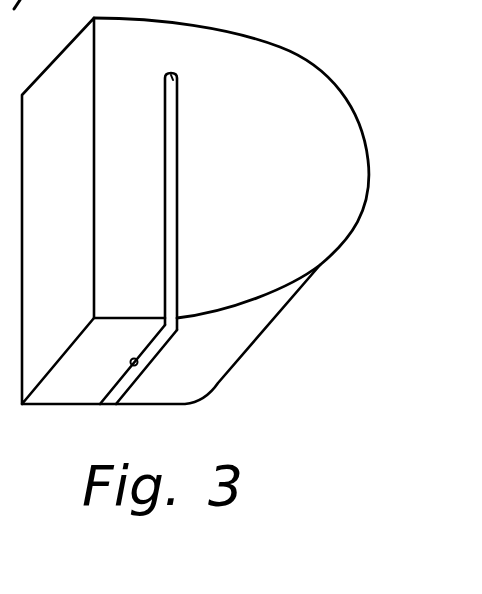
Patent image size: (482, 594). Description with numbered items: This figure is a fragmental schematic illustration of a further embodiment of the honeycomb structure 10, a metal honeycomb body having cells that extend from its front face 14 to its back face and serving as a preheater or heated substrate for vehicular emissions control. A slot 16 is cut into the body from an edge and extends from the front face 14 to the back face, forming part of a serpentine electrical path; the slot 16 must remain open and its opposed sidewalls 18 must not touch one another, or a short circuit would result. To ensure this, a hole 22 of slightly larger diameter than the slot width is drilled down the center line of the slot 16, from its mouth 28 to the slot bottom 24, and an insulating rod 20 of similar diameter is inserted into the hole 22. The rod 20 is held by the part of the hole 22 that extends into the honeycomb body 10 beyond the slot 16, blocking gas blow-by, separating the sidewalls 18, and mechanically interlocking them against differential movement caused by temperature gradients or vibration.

The honeycomb structure 10 is at (291, 49).
The front face 14 is at (321, 91).
The slot 16 is at (170, 143).
The sidewalls 18 is at (172, 196).
The insulating rod 20 is at (130, 362).
The hole 22 is at (145, 364).
The slot bottom 24 is at (175, 72).
The mouth 28 is at (104, 404).